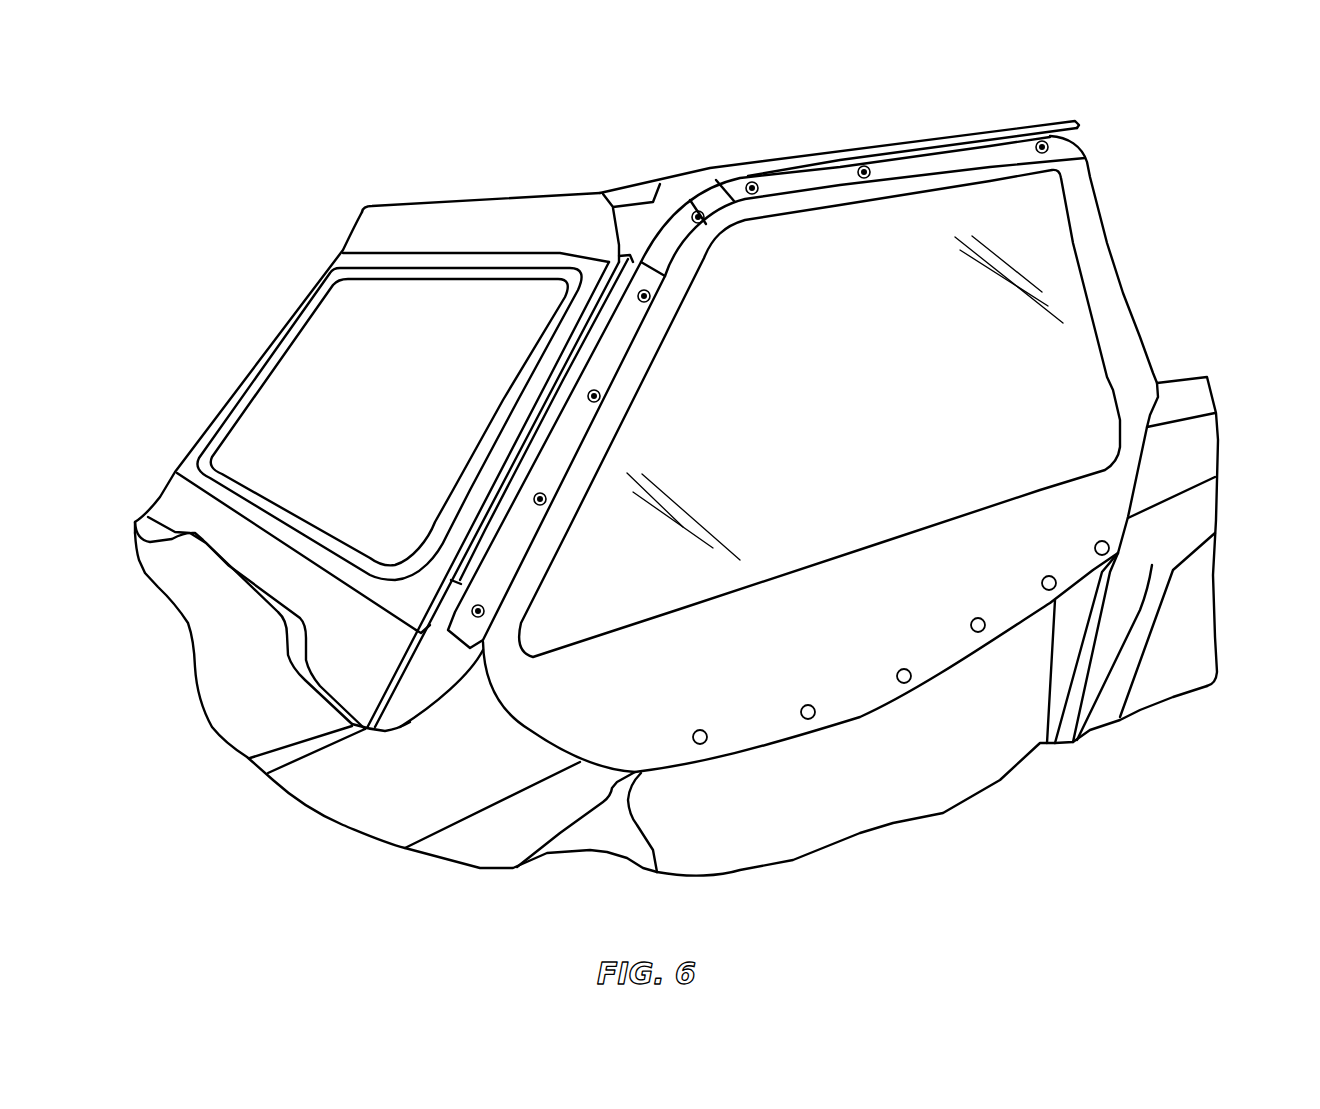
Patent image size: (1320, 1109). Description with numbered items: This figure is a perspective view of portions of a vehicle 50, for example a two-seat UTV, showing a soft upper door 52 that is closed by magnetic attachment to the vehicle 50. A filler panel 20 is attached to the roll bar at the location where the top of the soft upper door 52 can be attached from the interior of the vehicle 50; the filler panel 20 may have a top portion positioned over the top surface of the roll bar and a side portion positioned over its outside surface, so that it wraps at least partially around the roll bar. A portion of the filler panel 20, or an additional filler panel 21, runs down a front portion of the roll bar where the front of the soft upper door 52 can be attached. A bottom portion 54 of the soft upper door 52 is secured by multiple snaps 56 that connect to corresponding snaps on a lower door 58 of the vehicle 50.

The filler panel 20 is at (788, 178).
The additional filler panel 21 is at (648, 281).
The vehicle 50 is at (313, 157).
The soft upper door 52 is at (1078, 371).
The bottom portion 54 is at (890, 714).
The snaps 56 is at (808, 722).
The lower door 58 is at (646, 811).